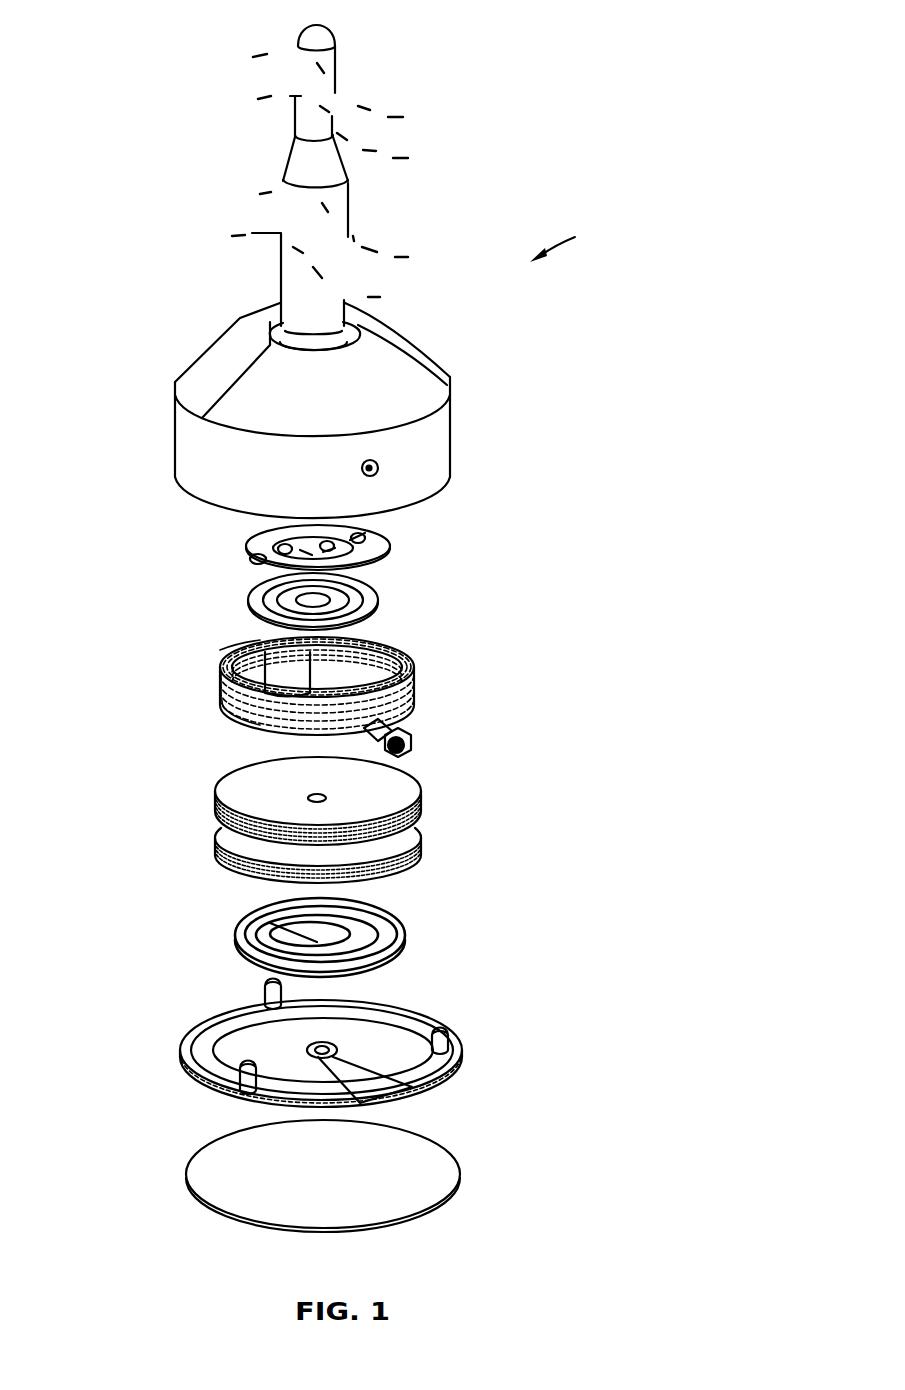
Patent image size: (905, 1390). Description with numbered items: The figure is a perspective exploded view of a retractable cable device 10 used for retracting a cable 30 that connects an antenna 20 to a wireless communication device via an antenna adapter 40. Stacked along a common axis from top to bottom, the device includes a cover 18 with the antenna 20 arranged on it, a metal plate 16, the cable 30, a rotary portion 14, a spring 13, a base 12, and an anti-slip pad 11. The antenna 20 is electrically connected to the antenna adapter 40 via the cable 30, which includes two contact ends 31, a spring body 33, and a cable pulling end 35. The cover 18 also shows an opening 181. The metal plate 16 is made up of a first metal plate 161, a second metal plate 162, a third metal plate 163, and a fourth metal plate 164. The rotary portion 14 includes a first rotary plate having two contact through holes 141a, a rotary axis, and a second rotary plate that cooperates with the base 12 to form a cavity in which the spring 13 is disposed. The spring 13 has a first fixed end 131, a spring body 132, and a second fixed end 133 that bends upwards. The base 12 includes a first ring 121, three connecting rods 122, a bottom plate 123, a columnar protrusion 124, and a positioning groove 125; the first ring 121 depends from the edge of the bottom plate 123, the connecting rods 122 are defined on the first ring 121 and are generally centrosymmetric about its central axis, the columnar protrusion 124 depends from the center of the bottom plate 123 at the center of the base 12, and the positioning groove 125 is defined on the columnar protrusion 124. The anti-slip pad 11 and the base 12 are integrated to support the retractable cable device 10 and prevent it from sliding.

The retractable cable device 10 is at (570, 241).
The anti-slip pad 11 is at (223, 1177).
The base 12 is at (407, 1054).
The first ring 121 is at (375, 1000).
The connecting rods 122 is at (447, 1030).
The bottom plate 123 is at (452, 1058).
The columnar protrusion 124 is at (372, 1099).
The positioning groove 125 is at (380, 1077).
The spring 13 is at (240, 942).
The first fixed end 131 is at (253, 915).
The spring body 132 is at (260, 965).
The second fixed end 133 is at (237, 935).
The rotary portion 14 is at (297, 808).
The contact through holes 141a is at (267, 793).
The metal plate 16 is at (401, 564).
The first metal plate 161 is at (363, 580).
The second metal plate 162 is at (385, 601).
The third metal plate 163 is at (297, 521).
The fourth metal plate 164 is at (377, 542).
The cover 18 is at (366, 410).
The housing hole 181 is at (378, 466).
The antenna 20 is at (337, 75).
The cable 30 is at (245, 686).
The contact ends 31 is at (226, 640).
The spring body 33 is at (220, 678).
The cable pulling end 35 is at (205, 713).
The antenna adapter 40 is at (400, 721).